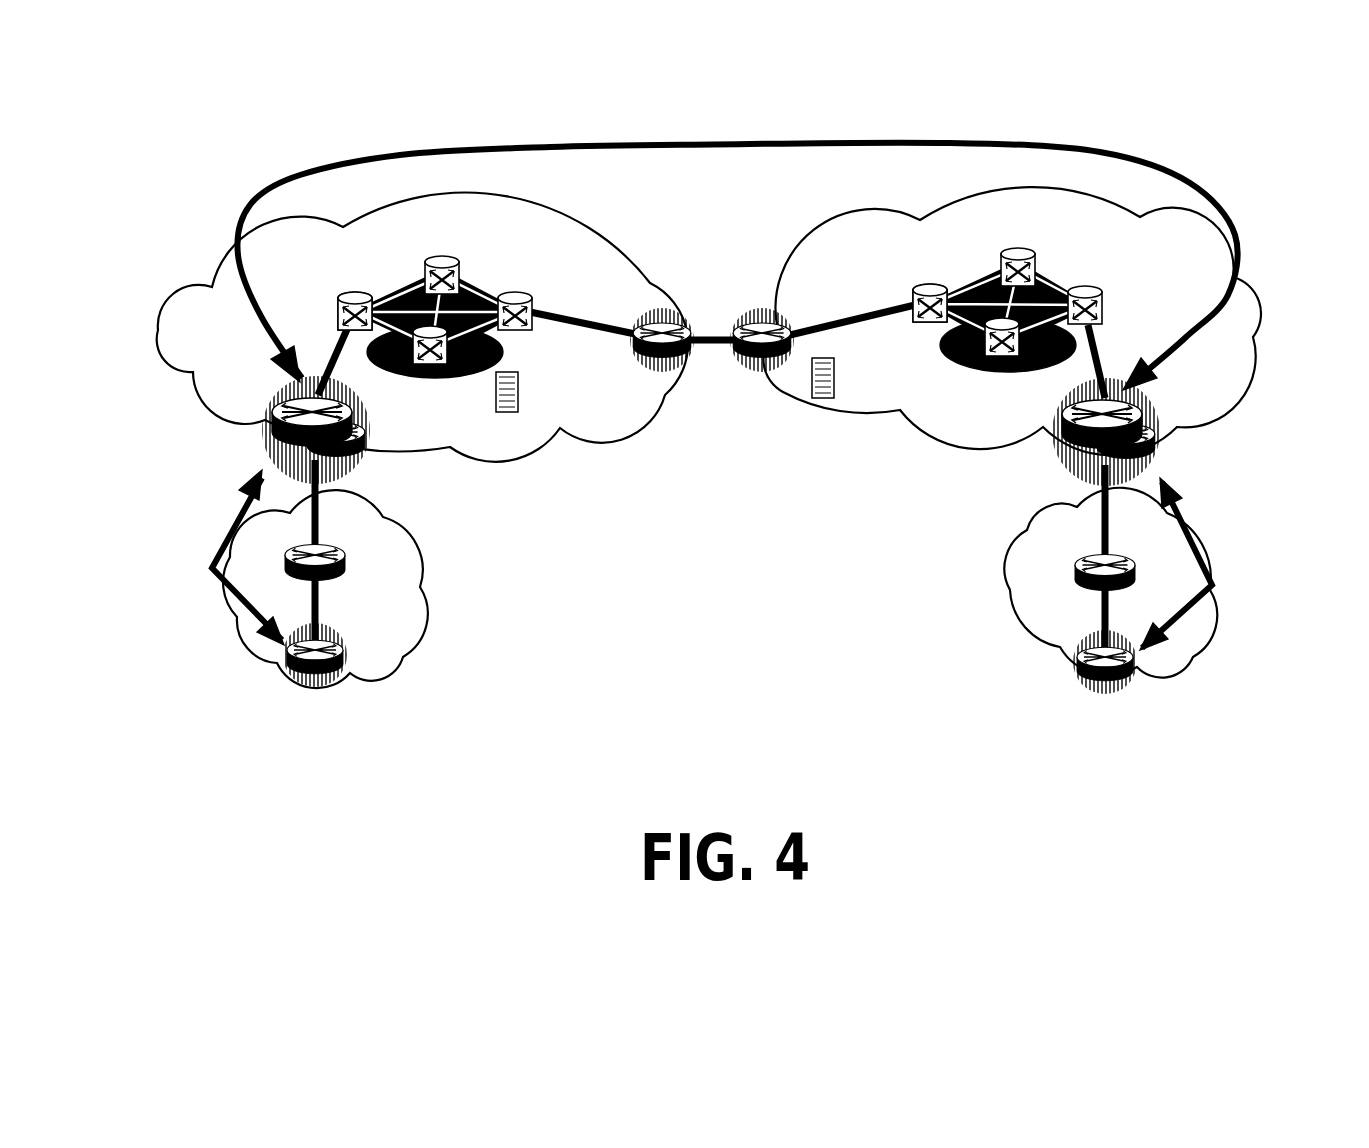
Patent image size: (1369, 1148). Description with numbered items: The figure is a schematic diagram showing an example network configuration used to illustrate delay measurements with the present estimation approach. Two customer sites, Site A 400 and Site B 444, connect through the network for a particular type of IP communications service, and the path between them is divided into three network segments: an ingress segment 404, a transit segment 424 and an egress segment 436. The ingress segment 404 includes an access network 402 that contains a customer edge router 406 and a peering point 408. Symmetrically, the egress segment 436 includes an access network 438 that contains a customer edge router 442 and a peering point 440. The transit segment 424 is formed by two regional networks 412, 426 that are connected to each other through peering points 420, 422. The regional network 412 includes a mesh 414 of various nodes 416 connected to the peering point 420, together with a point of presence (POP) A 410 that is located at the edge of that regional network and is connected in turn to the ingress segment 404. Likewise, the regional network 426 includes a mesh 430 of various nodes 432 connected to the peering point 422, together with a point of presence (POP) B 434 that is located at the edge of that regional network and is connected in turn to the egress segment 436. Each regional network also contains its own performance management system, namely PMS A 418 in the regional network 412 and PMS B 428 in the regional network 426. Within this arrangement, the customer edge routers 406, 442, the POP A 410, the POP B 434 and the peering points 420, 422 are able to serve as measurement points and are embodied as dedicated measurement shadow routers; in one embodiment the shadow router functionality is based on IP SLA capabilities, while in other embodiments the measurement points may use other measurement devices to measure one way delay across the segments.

The Site A 400 is at (475, 767).
The access network 402 is at (432, 588).
The ingress segment 404 is at (174, 557).
The customer edge router 406 is at (328, 640).
The peering point 408 is at (343, 562).
The point of presence (POP) A 410 is at (357, 455).
The regional network 412 is at (520, 443).
The mesh 414 is at (470, 285).
The nodes 416 is at (345, 300).
The performance management system (PMS) A 418 is at (520, 372).
The peering point 420 is at (672, 358).
The peering point 422 is at (735, 325).
The transit segment 424 is at (960, 142).
The regional network 426 is at (848, 210).
The performance management system (PMS) B 428 is at (834, 358).
The mesh 430 is at (1048, 285).
The nodes 432 is at (925, 290).
The point of presence (POP) B 434 is at (1145, 405).
The egress segment 436 is at (1247, 564).
The access network 438 is at (1027, 525).
The peering point 440 is at (1078, 575).
The customer edge router 442 is at (1135, 670).
The Site B 444 is at (1240, 797).